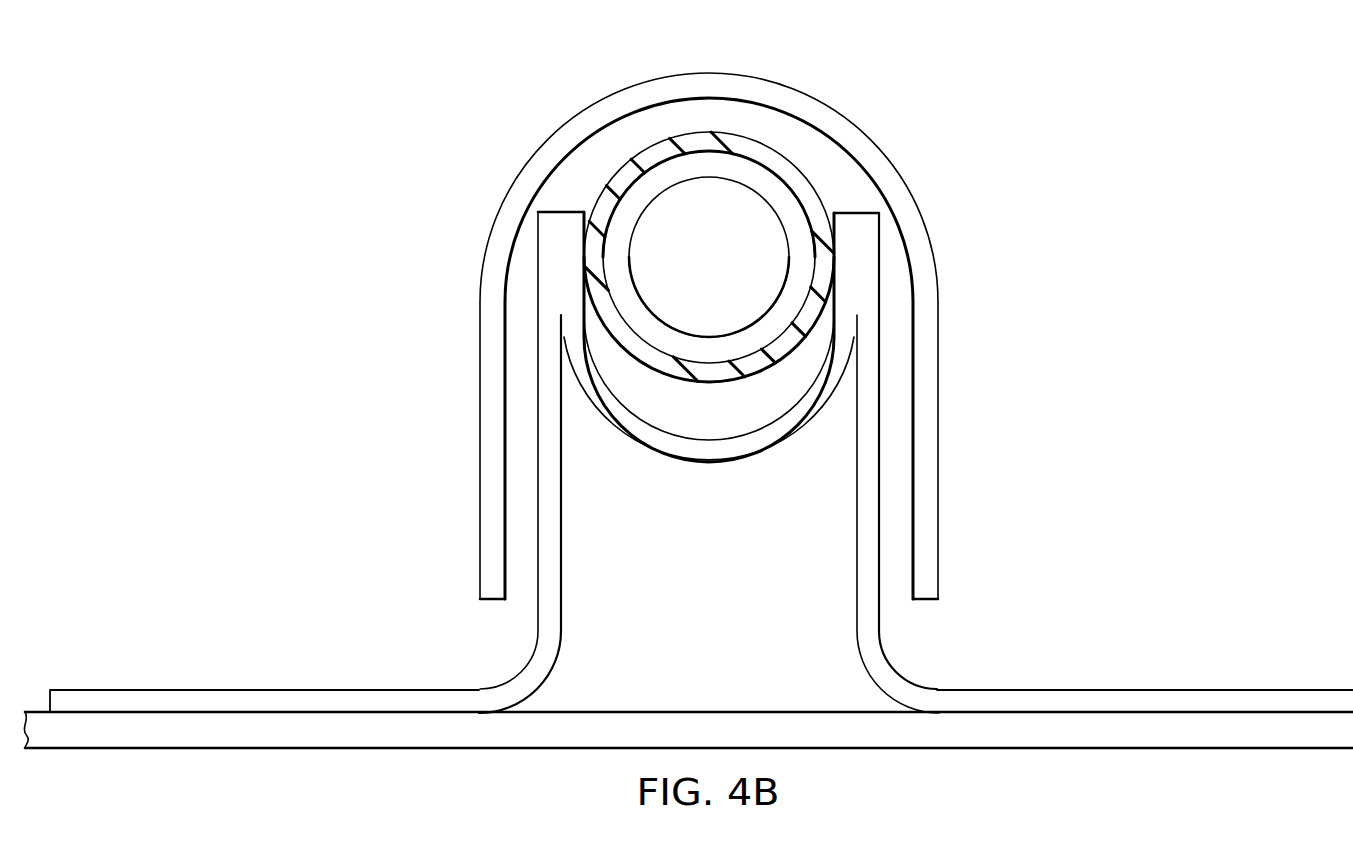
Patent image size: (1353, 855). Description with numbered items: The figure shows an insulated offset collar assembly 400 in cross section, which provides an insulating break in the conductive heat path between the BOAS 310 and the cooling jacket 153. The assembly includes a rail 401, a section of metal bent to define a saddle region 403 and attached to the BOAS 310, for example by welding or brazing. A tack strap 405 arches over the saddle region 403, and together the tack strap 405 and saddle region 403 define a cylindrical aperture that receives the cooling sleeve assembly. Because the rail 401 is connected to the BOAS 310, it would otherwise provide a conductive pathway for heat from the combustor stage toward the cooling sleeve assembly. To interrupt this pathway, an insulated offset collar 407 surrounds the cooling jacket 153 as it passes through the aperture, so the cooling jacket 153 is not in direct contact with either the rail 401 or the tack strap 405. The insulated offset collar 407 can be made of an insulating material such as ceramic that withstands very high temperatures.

The insulated offset collar assembly 400 is at (457, 97).
The tack strap 405 is at (653, 77).
The insulated offset collar 407 is at (788, 160).
The cooling jacket 153 is at (689, 270).
The saddle region 403 is at (733, 463).
The rail 401 is at (1151, 689).
The BOAS 310 is at (388, 748).